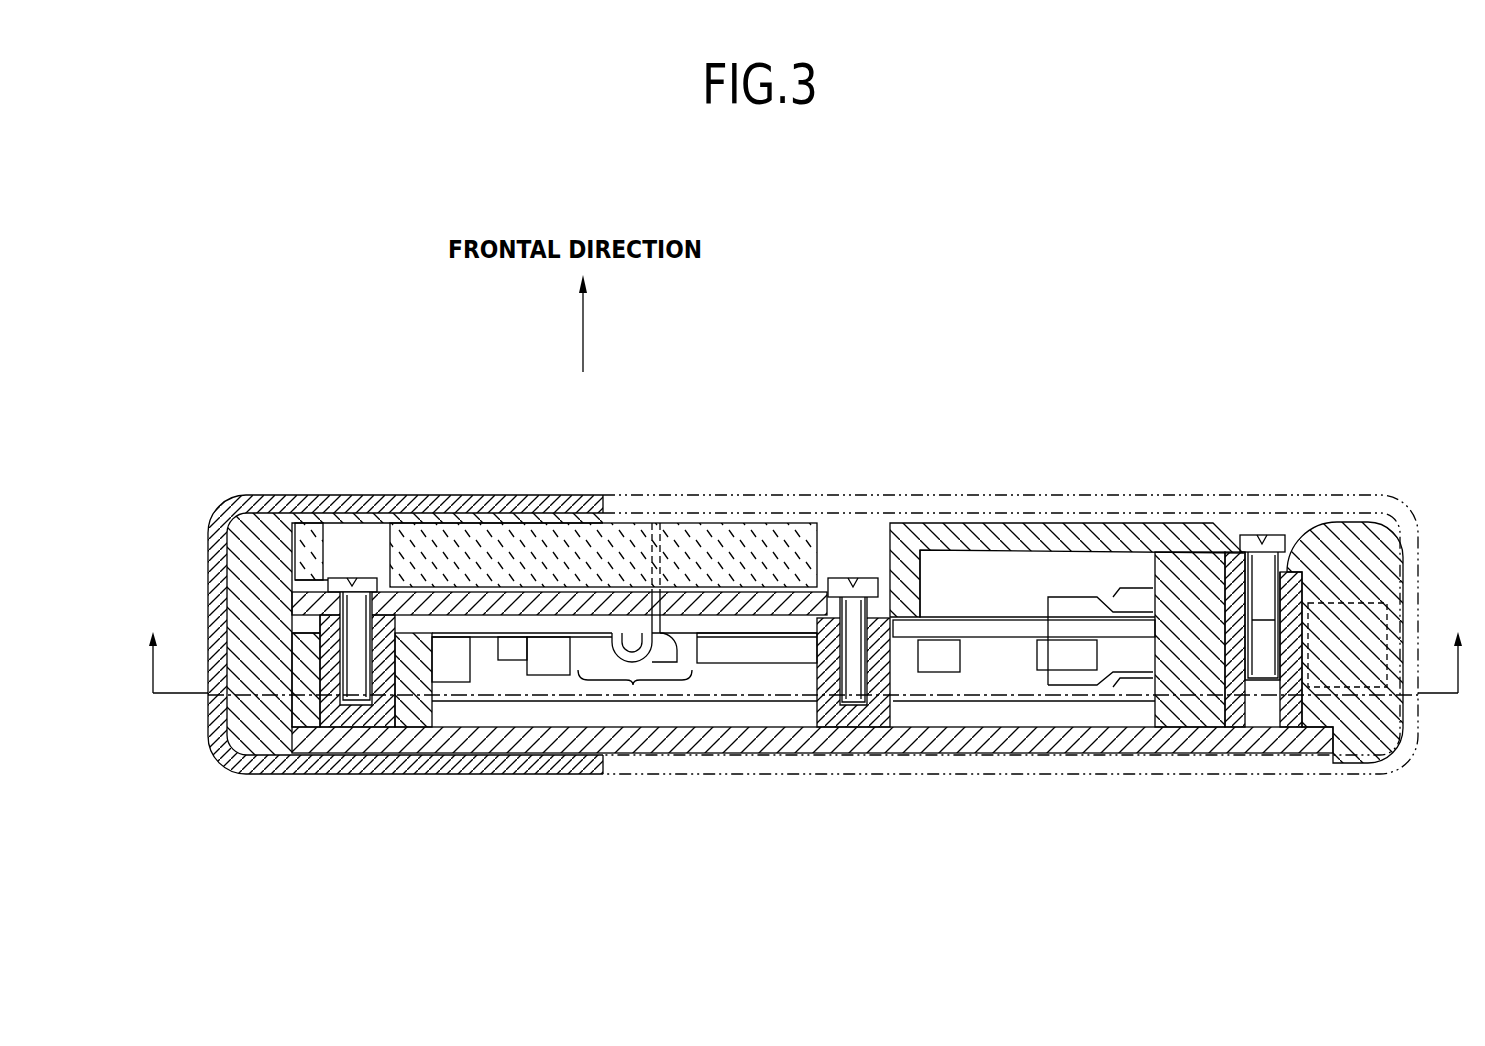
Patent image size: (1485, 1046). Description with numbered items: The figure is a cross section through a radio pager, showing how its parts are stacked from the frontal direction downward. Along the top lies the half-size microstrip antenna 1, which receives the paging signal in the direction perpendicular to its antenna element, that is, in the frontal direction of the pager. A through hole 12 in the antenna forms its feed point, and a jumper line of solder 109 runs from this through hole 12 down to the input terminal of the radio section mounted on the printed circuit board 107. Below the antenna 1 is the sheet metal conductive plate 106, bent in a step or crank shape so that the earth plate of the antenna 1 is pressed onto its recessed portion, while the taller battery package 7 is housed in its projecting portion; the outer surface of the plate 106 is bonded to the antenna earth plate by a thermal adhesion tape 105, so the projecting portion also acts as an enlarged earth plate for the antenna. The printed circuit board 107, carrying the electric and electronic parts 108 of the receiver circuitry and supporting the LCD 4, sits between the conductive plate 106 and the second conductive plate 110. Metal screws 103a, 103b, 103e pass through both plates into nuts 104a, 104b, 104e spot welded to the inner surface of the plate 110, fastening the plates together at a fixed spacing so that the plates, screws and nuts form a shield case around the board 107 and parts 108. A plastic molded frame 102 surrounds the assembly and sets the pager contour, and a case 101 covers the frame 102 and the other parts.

The microstrip antenna 1 is at (810, 592).
The LCD 4 is at (1018, 750).
The battery package 7 is at (1072, 687).
The through hole 12 is at (665, 523).
The case 101 is at (283, 497).
The frame 102 is at (1385, 518).
The metal screw 103a is at (355, 578).
The metal screw 103b is at (855, 578).
The metal screw 103e is at (1262, 540).
The nut 104a is at (365, 727).
The nut 104b is at (868, 748).
The nut 104e is at (1287, 748).
The thermal adhesion tape 105 is at (552, 575).
The conductive plate 106 is at (905, 548).
The printed circuit board 107 is at (948, 617).
The electric and electronic parts 108 is at (633, 685).
The solder 109 is at (680, 637).
The conductive plate 110 is at (765, 750).